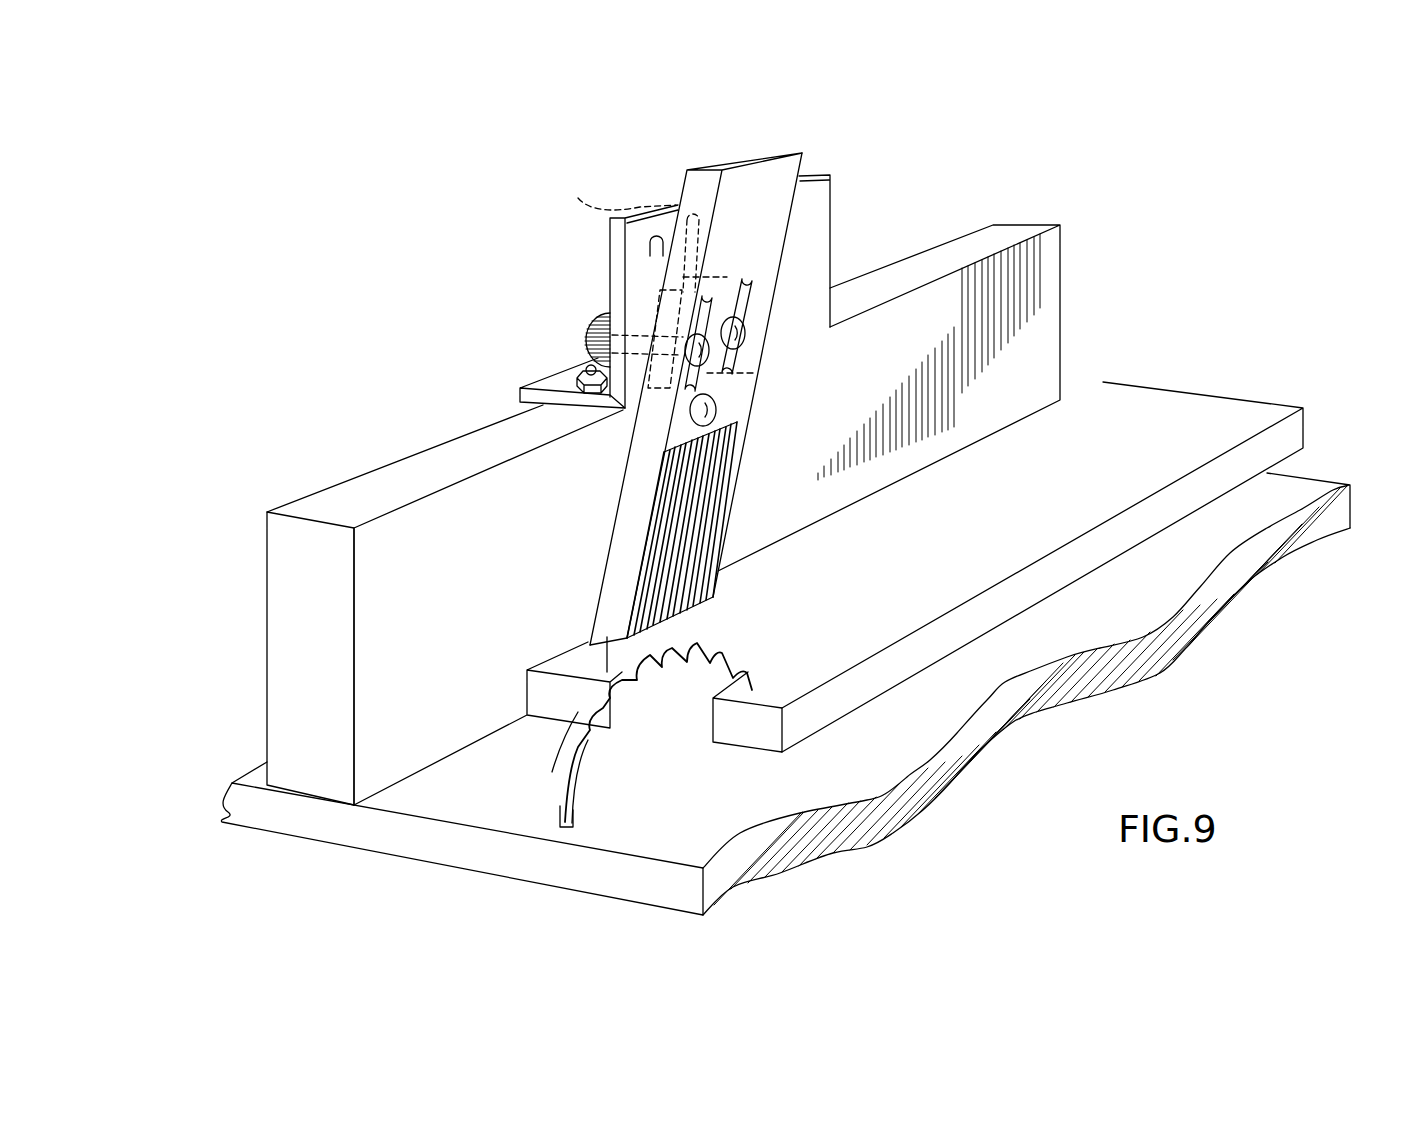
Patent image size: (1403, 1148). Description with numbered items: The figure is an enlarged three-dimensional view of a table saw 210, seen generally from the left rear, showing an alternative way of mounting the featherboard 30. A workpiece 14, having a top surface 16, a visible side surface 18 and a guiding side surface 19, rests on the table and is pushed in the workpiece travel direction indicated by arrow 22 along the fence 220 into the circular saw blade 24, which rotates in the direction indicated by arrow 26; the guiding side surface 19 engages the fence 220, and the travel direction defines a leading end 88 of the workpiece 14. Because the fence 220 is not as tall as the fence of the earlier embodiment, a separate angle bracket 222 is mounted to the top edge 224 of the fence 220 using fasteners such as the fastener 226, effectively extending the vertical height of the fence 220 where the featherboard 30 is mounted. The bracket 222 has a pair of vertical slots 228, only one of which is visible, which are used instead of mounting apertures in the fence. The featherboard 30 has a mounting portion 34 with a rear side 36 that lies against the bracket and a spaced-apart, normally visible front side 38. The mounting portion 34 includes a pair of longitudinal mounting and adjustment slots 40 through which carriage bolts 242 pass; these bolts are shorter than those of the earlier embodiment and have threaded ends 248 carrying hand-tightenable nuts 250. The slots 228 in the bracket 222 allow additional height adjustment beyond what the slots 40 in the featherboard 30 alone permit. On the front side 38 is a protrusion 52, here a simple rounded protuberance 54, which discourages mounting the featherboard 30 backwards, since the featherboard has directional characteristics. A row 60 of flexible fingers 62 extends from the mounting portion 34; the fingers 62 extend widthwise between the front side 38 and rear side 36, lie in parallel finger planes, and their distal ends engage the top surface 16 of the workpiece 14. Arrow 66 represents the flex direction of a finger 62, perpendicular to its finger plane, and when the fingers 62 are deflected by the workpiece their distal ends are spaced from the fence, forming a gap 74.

The workpiece 14 is at (1160, 420).
The top surface 16 is at (1212, 415).
The visible side surface 18 is at (1050, 575).
The guiding side surface 19 is at (523, 695).
The arrow 22 is at (822, 608).
The circular saw blade 24 is at (603, 780).
The arrow 26 is at (553, 753).
The featherboard 30 is at (572, 494).
The mounting portion 34 is at (792, 202).
The rear side 36 is at (683, 193).
The front side 38 is at (755, 246).
The longitudinal mounting and adjustment slots 40 is at (708, 307).
The protrusion 52 is at (660, 432).
The rounded protuberance 54 is at (718, 412).
The row of flexible fingers 60 is at (588, 540).
The flexible fingers 62 is at (615, 568).
The arrow 66 is at (607, 657).
The gap 74 is at (578, 625).
The leading end 88 is at (760, 733).
The table saw 210 is at (378, 378).
The fence 220 is at (415, 540).
The angle bracket 222 is at (618, 240).
The top edge 224 is at (360, 495).
The fastener 226 is at (580, 370).
The vertical slots 228 is at (605, 206).
The carriage bolts 242 is at (722, 357).
The threaded ends 248 is at (590, 355).
The hand-tightenable nuts 250 is at (598, 325).